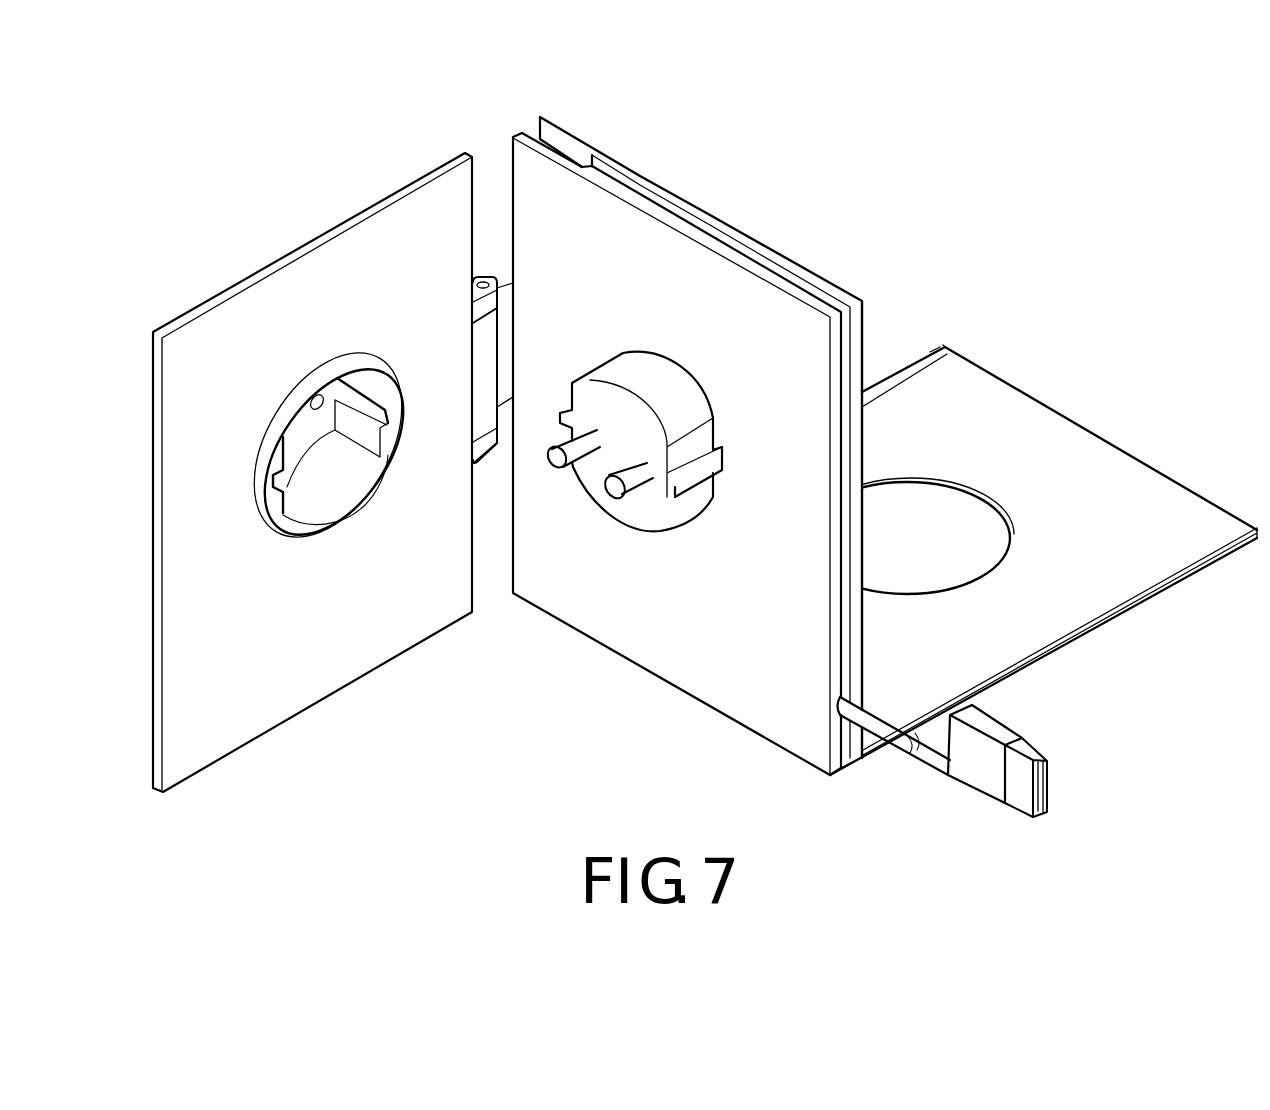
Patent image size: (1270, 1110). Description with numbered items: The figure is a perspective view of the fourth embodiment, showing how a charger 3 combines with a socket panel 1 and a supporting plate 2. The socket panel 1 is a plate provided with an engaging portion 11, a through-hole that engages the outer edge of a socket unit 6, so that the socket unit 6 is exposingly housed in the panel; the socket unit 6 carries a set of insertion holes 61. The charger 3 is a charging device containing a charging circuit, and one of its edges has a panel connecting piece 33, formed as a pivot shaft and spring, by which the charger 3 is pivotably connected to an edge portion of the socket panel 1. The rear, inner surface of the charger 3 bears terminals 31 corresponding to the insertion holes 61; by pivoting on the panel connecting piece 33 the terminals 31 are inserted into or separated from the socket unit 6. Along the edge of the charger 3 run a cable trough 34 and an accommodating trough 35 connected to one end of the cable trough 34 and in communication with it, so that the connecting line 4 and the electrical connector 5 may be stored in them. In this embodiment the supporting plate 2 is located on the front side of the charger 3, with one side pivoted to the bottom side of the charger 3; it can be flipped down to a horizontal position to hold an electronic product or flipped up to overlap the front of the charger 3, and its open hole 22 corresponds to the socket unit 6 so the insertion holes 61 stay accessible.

The socket panel 1 is at (192, 306).
The engaging portion 11 is at (331, 362).
The socket unit 6 is at (257, 433).
The insertion holes 61 is at (337, 477).
The panel connecting piece 33 is at (480, 366).
The charger 3 is at (828, 272).
The cable trough 34 is at (715, 232).
The accommodating trough 35 is at (563, 143).
The terminals 31 is at (634, 488).
The supporting plate 2 is at (991, 370).
The open hole 22 is at (942, 508).
The connecting line 4 is at (925, 775).
The electrical connector 5 is at (968, 803).